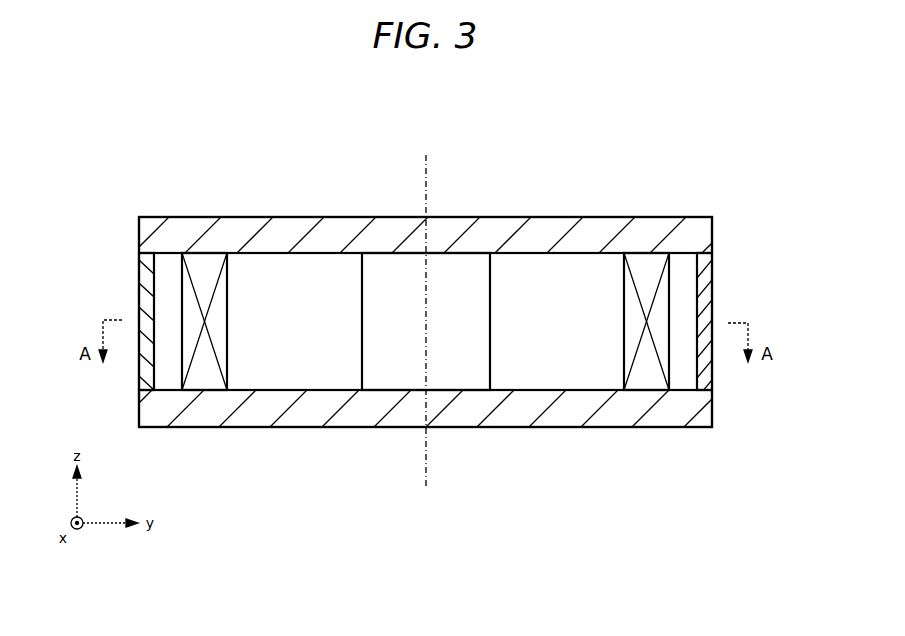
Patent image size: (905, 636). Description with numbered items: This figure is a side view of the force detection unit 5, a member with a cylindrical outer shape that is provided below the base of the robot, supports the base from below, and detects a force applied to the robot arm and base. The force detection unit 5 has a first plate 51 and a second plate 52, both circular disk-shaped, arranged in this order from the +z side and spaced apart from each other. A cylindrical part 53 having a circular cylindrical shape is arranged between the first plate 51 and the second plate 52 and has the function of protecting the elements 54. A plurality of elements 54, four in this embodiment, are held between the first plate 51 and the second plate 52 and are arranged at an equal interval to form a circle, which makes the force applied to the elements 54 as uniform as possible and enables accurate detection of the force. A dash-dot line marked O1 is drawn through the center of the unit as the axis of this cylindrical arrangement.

The force detection unit 5 is at (563, 176).
The first plate 51 is at (703, 228).
The second plate 52 is at (703, 400).
The cylindrical part 53 is at (703, 308).
The element 54 is at (204, 278).
The optical axis O1 is at (428, 468).